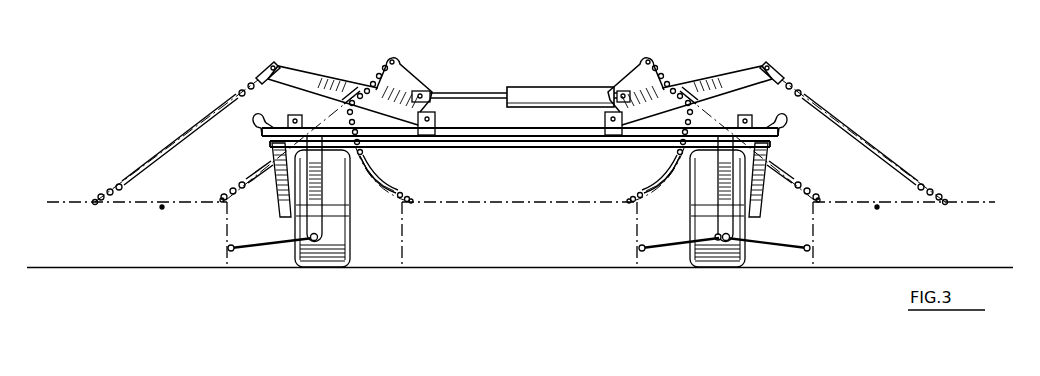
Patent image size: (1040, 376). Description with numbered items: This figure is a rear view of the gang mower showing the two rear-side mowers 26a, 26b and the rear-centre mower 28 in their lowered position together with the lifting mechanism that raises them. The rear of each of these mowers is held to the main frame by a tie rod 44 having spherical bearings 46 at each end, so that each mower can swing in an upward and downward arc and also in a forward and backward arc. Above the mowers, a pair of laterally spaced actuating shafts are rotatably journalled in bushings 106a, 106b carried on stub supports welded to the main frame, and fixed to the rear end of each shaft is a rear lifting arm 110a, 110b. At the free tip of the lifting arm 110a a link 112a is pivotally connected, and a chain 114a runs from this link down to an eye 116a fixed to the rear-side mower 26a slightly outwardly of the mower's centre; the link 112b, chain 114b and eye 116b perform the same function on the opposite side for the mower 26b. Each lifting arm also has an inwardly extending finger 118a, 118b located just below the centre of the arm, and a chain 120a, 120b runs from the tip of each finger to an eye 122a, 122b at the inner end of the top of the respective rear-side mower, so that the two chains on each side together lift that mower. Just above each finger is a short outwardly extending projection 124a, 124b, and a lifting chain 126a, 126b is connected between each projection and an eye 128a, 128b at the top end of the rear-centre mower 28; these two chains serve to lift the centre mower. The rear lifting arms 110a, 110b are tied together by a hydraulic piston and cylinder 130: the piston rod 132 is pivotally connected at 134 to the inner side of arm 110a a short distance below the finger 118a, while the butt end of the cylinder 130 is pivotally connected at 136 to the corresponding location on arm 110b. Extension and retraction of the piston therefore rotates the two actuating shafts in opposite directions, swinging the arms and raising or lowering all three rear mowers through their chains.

The rear-side mower 26a is at (60, 200).
The rear-side mower 26b is at (972, 200).
The rear-centre mower 28 is at (562, 258).
The tie rod 44 is at (252, 246).
The spherical bearing 46 is at (231, 252).
The bushing 106a is at (436, 122).
The bushing 106b is at (578, 130).
The rear lifting arm 110a is at (327, 76).
The rear lifting arm 110b is at (693, 82).
The link 112a is at (262, 72).
The link 112b is at (782, 70).
The chain 114a is at (176, 140).
The chain 114b is at (857, 133).
The eye 116a is at (95, 206).
The eye 116b is at (948, 205).
The finger 118a is at (396, 62).
The finger 118b is at (643, 60).
The chain 120a is at (232, 186).
The chain 120b is at (800, 182).
The eye 122a is at (222, 204).
The eye 122b is at (828, 204).
The projection 124a is at (370, 84).
The projection 124b is at (690, 112).
The lifting chain 126a is at (382, 166).
The lifting chain 126b is at (645, 186).
The eye 128a is at (418, 204).
The eye 128b is at (636, 204).
The hydraulic piston and cylinder 130 is at (528, 87).
The piston rod 132 is at (472, 92).
The pivotal connection 134 is at (418, 90).
The pivotal connection 136 is at (626, 92).